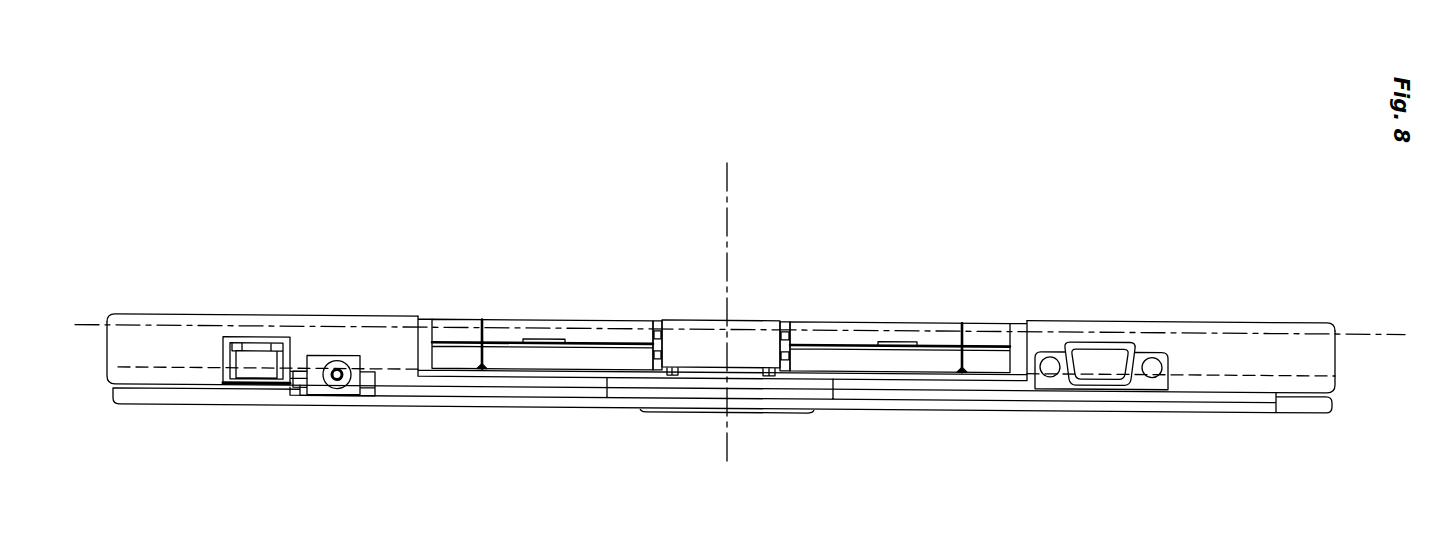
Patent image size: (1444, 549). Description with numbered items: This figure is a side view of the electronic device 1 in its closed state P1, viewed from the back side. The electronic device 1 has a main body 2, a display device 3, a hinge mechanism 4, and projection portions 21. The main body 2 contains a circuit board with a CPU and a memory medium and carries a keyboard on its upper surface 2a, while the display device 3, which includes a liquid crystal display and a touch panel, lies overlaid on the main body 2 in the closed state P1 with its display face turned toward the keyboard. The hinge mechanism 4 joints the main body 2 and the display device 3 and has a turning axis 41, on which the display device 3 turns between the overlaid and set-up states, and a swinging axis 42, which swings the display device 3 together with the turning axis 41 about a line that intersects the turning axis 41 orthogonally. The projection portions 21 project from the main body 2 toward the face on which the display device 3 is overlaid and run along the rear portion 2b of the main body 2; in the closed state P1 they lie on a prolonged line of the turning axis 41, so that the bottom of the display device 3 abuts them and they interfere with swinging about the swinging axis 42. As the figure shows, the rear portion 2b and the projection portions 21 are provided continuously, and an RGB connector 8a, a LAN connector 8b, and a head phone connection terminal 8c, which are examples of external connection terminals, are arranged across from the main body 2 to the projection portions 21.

The electronic device 1 is at (761, 320).
The main body 2 is at (1340, 386).
The upper surface 2a is at (395, 360).
The rear portion 2b is at (1276, 398).
The projection portions 21 is at (177, 320).
The display device 3 is at (905, 318).
The hinge mechanism 4 is at (736, 293).
The turning axis 41 is at (640, 325).
The swinging axis 42 is at (748, 345).
The RGB connector 8a is at (1123, 332).
The LAN connector 8b is at (257, 355).
The head phone connection terminal 8c is at (352, 358).
The closed state P1 is at (965, 318).